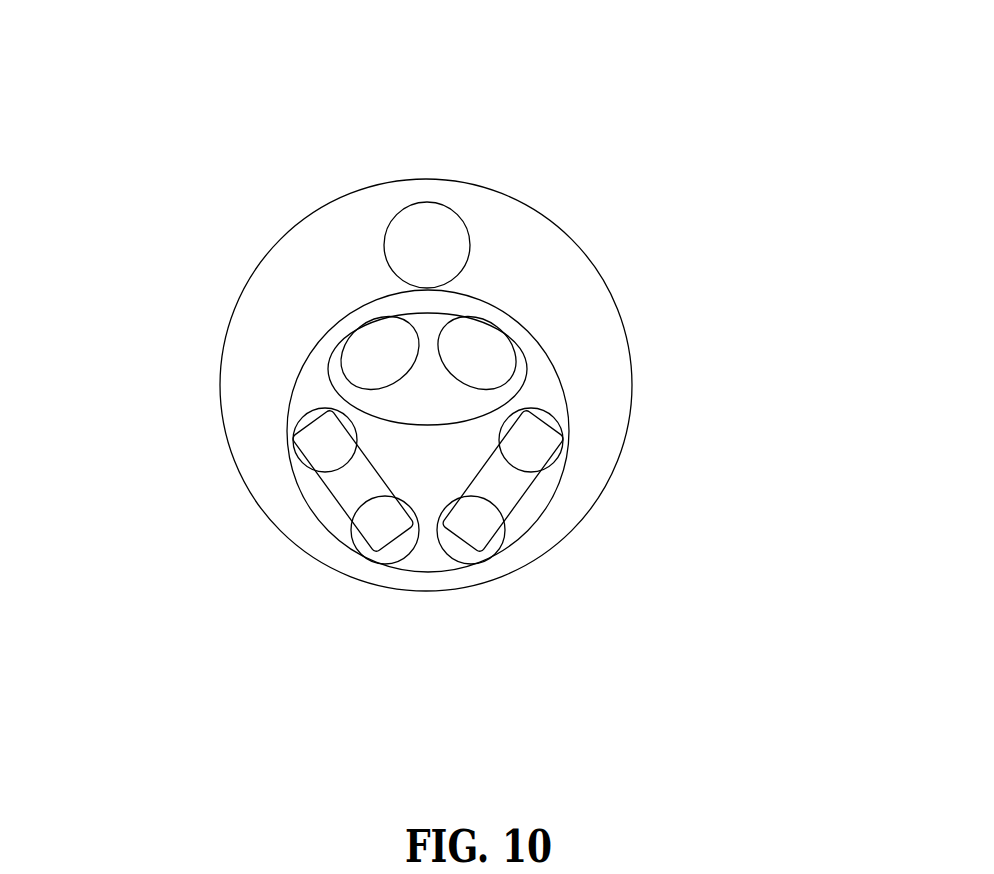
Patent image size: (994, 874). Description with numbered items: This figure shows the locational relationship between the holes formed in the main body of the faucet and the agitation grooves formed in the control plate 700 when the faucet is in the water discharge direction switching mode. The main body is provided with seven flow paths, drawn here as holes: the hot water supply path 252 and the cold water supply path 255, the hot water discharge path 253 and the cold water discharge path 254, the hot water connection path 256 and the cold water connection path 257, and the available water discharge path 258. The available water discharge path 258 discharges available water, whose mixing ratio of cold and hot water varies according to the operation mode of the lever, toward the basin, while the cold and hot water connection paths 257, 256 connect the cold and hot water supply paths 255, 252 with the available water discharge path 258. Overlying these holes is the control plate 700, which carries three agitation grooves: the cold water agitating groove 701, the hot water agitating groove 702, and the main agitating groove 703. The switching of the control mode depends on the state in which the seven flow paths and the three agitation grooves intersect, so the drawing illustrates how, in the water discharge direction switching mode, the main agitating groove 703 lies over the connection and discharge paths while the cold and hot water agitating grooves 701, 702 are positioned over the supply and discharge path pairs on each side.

The control plate 700 is at (530, 360).
The main agitating groove 703 is at (437, 405).
The cold water agitating groove 701 is at (352, 478).
The hot water agitating groove 702 is at (504, 478).
The hot water supply path 252 is at (312, 418).
The hot water discharge path 253 is at (349, 525).
The cold water discharge path 254 is at (507, 525).
The cold water supply path 255 is at (544, 418).
The hot water connection path 256 is at (365, 321).
The cold water connection path 257 is at (491, 321).
The available water discharge path 258 is at (435, 218).